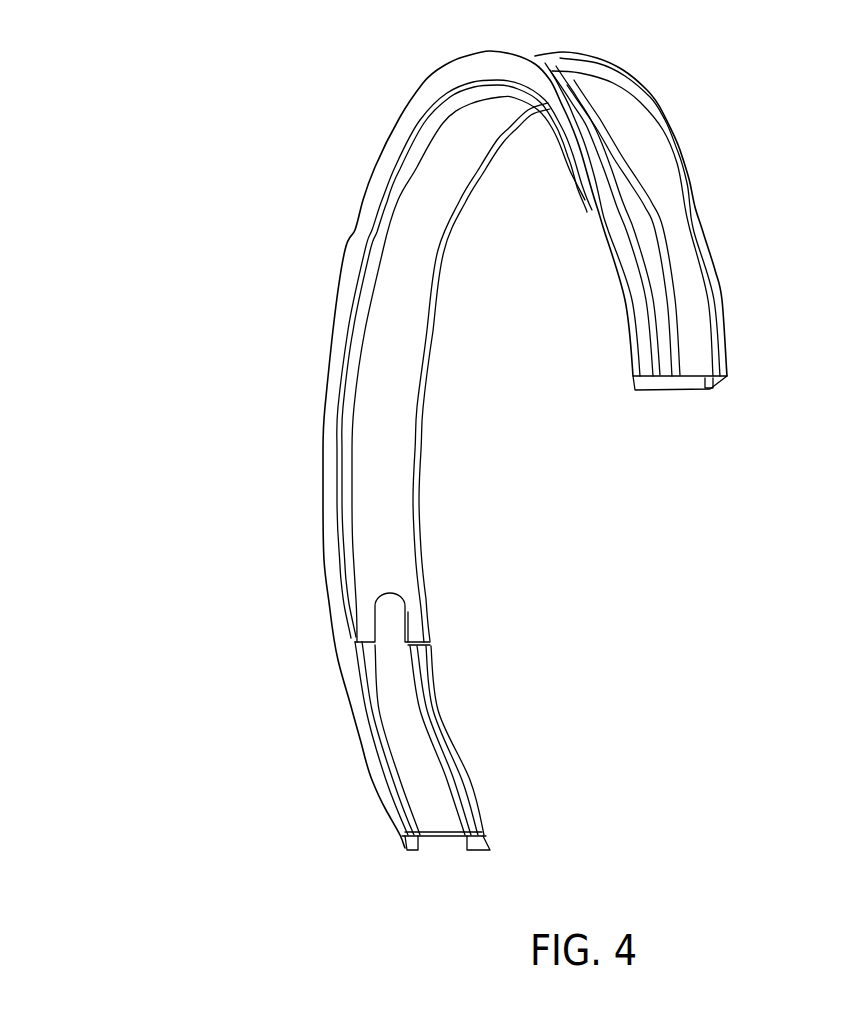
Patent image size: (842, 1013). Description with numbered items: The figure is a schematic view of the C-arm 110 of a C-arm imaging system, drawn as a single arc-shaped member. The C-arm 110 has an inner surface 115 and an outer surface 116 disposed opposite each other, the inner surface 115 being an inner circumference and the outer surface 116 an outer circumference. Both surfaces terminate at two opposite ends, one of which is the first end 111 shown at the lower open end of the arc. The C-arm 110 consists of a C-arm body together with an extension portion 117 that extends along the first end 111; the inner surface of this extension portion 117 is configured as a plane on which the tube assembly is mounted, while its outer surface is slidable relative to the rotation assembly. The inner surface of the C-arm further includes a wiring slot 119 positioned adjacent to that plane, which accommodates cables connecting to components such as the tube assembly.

The C-arm 110 is at (453, 453).
The first end 111 is at (384, 849).
The inner surface 115 is at (385, 407).
The outer surface 116 is at (677, 309).
The extension portion 117 is at (413, 748).
The wiring slot 119 is at (392, 617).